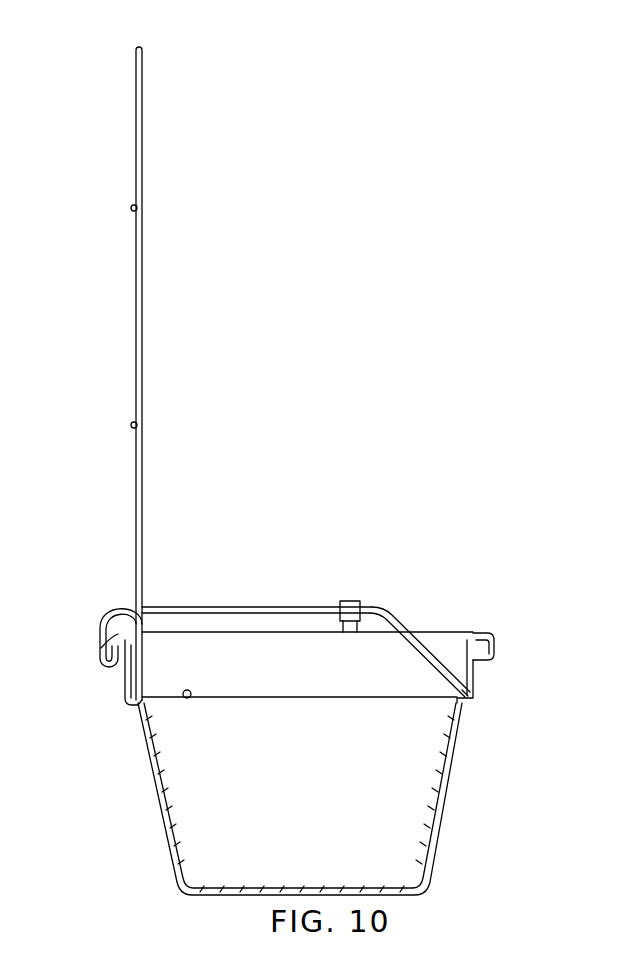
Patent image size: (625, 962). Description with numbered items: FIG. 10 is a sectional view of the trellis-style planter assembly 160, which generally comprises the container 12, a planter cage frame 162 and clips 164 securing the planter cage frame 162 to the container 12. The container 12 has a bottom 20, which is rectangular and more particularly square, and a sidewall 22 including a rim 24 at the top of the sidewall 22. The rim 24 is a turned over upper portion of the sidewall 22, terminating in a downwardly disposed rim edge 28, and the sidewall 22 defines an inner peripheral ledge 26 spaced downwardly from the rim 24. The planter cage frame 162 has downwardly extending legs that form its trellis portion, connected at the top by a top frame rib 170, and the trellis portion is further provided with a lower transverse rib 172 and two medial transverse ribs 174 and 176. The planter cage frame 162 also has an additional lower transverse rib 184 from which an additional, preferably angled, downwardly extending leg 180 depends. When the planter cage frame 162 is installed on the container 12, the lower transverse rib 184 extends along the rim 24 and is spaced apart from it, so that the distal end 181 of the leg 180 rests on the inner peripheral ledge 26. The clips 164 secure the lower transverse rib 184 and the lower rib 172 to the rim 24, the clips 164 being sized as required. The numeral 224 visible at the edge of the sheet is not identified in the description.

The container 12 is at (462, 808).
The bottom 20 is at (246, 897).
The sidewall 22 is at (158, 806).
The rim 24 is at (478, 634).
The inner peripheral ledge 26 is at (185, 698).
The rim edge 28 is at (487, 660).
The trellis-style planter assembly 160 is at (351, 403).
The planter cage frame 162 is at (109, 343).
The clips 164 is at (353, 600).
The top frame rib 170 is at (140, 47).
The lower transverse rib 172 is at (123, 617).
The medial transverse rib 174 is at (130, 425).
The medial transverse rib 176 is at (130, 208).
The downwardly extending leg 180 is at (408, 623).
The distal end 181 is at (448, 688).
The lower transverse rib 184 is at (226, 595).
The partial numeral 224 is at (475, 957).